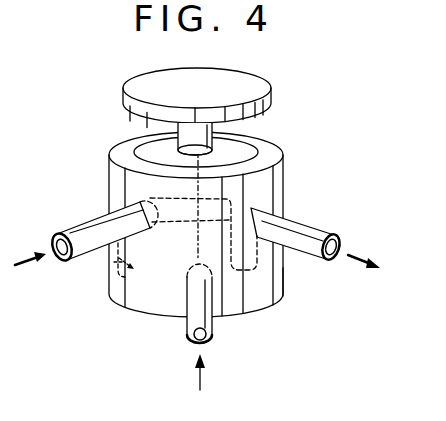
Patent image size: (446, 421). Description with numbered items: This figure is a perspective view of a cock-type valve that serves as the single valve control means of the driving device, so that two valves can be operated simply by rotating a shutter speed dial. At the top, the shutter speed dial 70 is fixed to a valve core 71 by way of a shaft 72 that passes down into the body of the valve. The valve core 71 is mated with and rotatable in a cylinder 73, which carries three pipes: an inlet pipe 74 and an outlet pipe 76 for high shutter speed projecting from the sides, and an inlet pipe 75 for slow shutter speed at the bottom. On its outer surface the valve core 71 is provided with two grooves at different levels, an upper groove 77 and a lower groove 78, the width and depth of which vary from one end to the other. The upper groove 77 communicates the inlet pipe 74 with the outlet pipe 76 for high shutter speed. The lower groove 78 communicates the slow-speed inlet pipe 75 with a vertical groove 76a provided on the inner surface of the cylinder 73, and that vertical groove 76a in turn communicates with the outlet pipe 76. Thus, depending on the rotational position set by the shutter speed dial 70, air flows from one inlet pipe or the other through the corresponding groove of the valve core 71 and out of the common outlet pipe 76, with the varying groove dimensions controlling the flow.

The shutter speed dial 70 is at (196, 74).
The valve core 71 is at (242, 152).
The shaft 72 is at (177, 134).
The cylinder 73 is at (112, 179).
The inlet pipe 74 is at (85, 257).
The inlet pipe 75 is at (213, 318).
The outlet pipe 76 is at (297, 225).
The vertical groove 76a is at (284, 280).
The upper groove 77 is at (175, 226).
The lower groove 78 is at (126, 277).